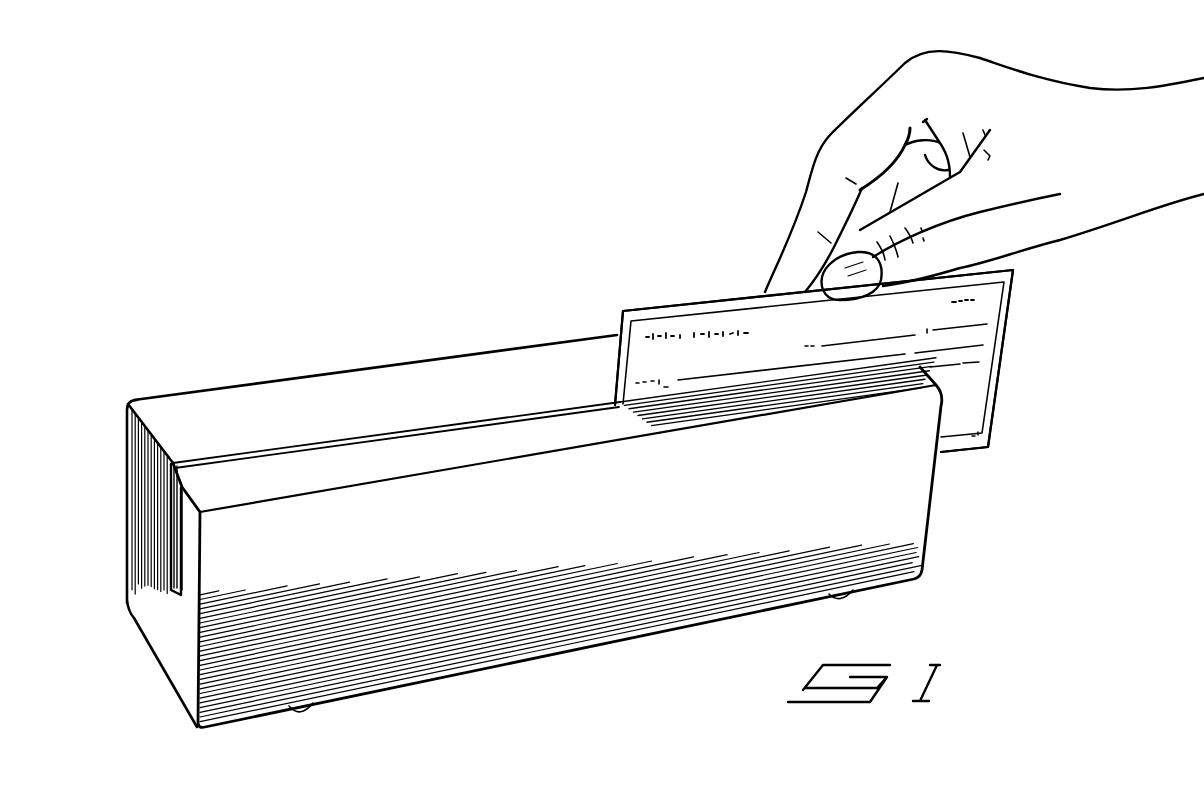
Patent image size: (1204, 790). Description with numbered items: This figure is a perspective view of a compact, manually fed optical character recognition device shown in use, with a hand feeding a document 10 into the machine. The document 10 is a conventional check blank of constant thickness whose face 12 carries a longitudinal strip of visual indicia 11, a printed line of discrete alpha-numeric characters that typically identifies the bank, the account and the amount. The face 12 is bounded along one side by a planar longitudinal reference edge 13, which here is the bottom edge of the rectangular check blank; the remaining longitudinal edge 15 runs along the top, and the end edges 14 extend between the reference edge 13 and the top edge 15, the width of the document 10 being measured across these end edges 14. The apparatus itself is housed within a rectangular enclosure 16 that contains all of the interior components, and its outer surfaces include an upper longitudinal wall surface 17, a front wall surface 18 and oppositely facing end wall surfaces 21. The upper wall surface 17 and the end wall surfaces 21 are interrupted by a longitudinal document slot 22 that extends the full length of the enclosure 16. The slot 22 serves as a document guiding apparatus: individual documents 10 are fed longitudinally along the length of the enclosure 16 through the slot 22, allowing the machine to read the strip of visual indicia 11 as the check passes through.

The document 10 is at (1013, 304).
The strip of visual indicia 11 is at (990, 431).
The face 12 is at (980, 375).
The reference edge 13 is at (957, 450).
The end edges 14 is at (616, 384).
The longitudinal edge 15 is at (710, 306).
The enclosure 16 is at (908, 516).
The upper longitudinal wall surface 17 is at (374, 372).
The front wall surface 18 is at (705, 604).
The end wall surface 21 is at (176, 678).
The document slot 22 is at (427, 433).